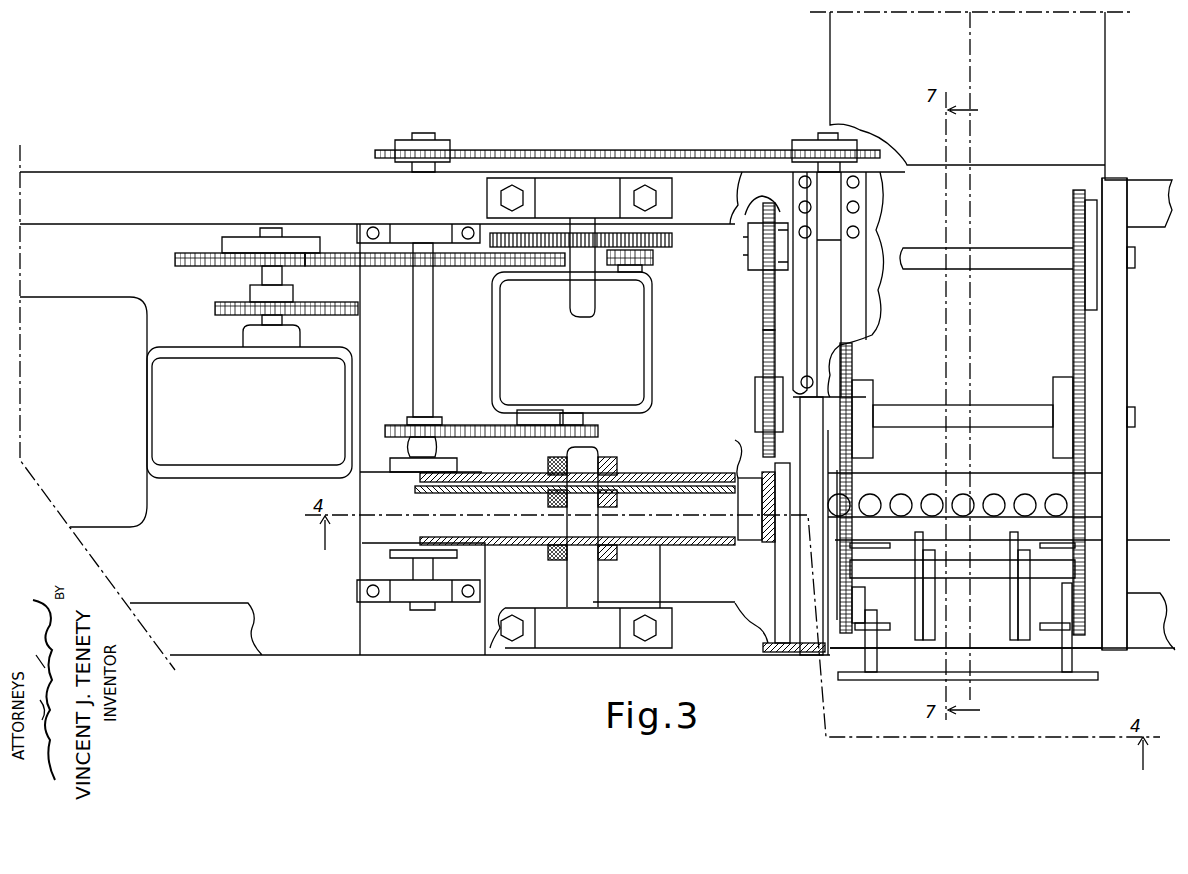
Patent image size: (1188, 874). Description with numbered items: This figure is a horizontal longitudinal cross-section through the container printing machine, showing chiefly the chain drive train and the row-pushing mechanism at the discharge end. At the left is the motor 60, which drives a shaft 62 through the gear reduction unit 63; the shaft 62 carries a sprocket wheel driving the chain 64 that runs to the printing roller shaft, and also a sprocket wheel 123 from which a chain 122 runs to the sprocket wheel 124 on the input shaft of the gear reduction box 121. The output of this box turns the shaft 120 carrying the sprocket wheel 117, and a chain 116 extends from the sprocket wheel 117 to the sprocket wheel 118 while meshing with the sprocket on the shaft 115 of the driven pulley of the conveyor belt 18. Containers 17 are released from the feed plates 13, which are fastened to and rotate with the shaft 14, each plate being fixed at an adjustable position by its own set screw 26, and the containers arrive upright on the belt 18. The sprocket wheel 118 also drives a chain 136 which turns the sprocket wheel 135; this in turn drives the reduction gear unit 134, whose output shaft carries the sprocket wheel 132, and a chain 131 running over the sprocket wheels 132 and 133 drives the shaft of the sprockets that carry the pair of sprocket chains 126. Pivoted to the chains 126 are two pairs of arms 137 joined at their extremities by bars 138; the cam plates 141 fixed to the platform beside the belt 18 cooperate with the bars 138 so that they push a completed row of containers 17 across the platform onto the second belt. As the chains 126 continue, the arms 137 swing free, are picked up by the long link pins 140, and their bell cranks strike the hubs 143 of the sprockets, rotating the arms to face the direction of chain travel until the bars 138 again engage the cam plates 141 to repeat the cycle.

The feed plates 13 is at (665, 473).
The shaft 14 is at (560, 300).
The containers 17 is at (1020, 509).
The conveyor belt 18 is at (1134, 414).
The set screw 26 is at (548, 466).
The motor 60 is at (140, 504).
The shaft 62 is at (278, 273).
The gear reduction unit 63 is at (252, 450).
The chain 64 is at (222, 316).
The shaft 115 is at (418, 270).
The chain 116 is at (468, 426).
The sprocket wheel 117 is at (500, 427).
The sprocket wheel 118 is at (445, 148).
The shaft 120 is at (578, 412).
The gear reduction box 121 is at (628, 345).
The chain 122 is at (178, 256).
The sprocket wheel 123 is at (213, 267).
The sprocket wheel 124 is at (660, 258).
The sprocket chains 126 is at (850, 352).
The chain 131 is at (762, 340).
The sprocket wheel 132 is at (750, 234).
The sprocket wheel 133 is at (752, 393).
The reduction gear unit 134 is at (832, 258).
The sprocket wheel 135 is at (806, 140).
The chain 136 is at (556, 150).
The arms 137 is at (875, 645).
The bars 138 is at (1042, 676).
The long link pin 140 is at (888, 632).
The cam plates 141 is at (920, 604).
The hubs 143 is at (868, 385).